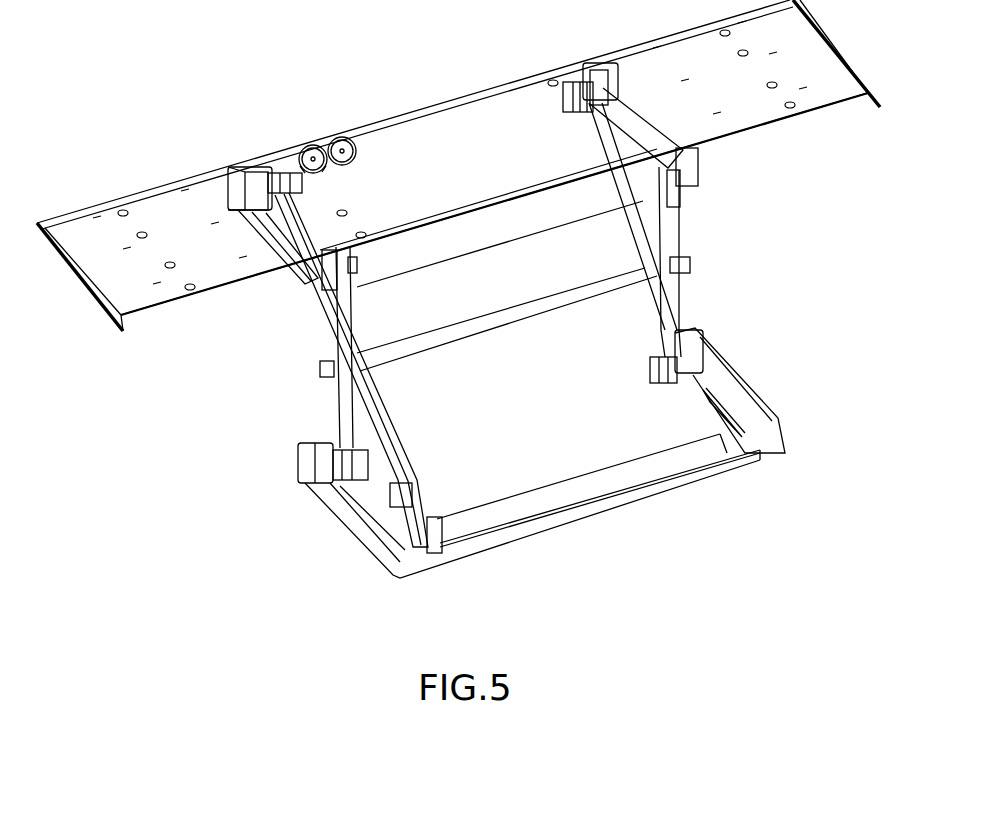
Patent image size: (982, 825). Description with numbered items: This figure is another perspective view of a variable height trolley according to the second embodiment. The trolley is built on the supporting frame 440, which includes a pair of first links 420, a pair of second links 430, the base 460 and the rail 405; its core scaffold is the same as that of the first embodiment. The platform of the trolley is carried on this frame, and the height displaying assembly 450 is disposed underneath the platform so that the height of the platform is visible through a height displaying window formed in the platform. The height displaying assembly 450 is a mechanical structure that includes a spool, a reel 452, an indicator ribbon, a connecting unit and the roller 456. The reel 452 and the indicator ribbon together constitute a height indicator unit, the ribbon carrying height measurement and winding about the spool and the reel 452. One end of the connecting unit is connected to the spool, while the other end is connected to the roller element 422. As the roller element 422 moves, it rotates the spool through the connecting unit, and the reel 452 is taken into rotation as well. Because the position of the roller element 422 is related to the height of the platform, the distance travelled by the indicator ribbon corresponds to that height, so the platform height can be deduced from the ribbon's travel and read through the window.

The rail 405 is at (233, 190).
The roller element 422 is at (258, 188).
The roller 456 is at (279, 167).
The reel 452 is at (363, 160).
The height displaying assembly 450 is at (391, 126).
The second links 430 is at (673, 227).
The first links 420 is at (338, 407).
The base 460 is at (753, 407).
The supporting frame 440 is at (757, 488).